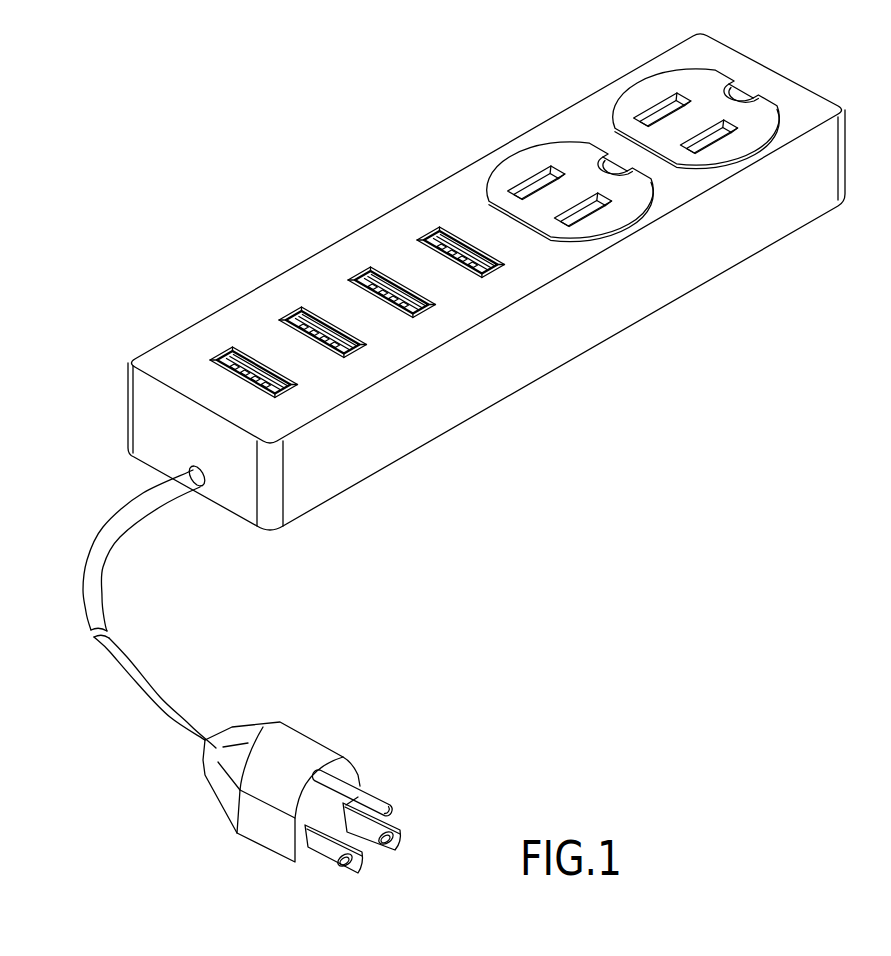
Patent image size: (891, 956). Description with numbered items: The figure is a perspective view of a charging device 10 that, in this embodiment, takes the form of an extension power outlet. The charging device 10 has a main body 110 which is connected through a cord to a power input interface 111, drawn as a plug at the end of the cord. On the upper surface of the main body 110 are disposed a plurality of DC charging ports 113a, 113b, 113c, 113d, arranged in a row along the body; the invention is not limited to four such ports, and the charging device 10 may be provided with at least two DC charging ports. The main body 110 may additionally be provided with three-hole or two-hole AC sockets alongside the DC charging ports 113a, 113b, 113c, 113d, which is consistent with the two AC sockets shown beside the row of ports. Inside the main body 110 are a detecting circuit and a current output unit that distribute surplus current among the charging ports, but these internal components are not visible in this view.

The charging device 10 is at (56, 161).
The main body 110 is at (773, 75).
The power input interface 111 is at (303, 750).
The DC charging port 113a is at (232, 362).
The DC charging port 113b is at (300, 322).
The DC charging port 113c is at (370, 282).
The DC charging port 113d is at (439, 242).